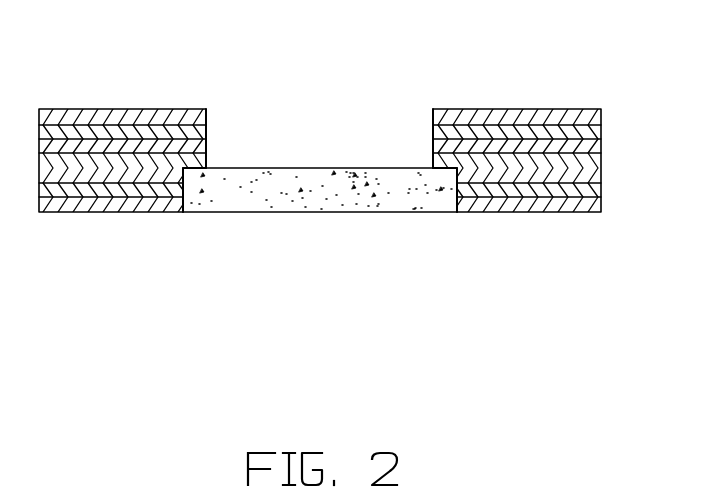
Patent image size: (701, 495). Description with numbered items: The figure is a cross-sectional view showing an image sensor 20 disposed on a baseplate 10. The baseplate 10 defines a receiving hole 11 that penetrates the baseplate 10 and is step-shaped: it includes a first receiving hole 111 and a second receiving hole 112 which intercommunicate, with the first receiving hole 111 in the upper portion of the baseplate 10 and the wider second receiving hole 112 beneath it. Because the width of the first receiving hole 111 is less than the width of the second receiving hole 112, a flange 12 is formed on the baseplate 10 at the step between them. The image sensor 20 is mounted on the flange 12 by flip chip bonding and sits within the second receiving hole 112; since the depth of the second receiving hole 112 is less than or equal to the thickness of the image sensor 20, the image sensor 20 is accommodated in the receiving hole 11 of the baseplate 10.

The baseplate 10 is at (130, 117).
The receiving hole 11 is at (272, 273).
The first receiving hole 111 is at (208, 147).
The second receiving hole 112 is at (187, 194).
The flange 12 is at (445, 168).
The image sensor 20 is at (310, 185).